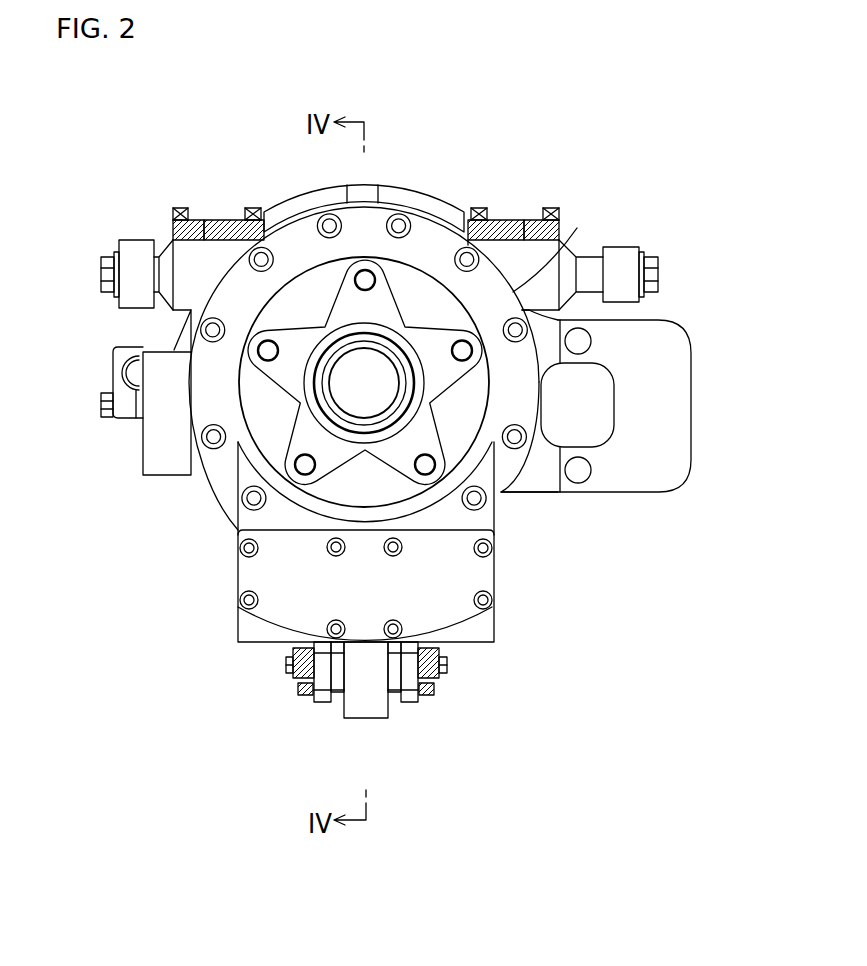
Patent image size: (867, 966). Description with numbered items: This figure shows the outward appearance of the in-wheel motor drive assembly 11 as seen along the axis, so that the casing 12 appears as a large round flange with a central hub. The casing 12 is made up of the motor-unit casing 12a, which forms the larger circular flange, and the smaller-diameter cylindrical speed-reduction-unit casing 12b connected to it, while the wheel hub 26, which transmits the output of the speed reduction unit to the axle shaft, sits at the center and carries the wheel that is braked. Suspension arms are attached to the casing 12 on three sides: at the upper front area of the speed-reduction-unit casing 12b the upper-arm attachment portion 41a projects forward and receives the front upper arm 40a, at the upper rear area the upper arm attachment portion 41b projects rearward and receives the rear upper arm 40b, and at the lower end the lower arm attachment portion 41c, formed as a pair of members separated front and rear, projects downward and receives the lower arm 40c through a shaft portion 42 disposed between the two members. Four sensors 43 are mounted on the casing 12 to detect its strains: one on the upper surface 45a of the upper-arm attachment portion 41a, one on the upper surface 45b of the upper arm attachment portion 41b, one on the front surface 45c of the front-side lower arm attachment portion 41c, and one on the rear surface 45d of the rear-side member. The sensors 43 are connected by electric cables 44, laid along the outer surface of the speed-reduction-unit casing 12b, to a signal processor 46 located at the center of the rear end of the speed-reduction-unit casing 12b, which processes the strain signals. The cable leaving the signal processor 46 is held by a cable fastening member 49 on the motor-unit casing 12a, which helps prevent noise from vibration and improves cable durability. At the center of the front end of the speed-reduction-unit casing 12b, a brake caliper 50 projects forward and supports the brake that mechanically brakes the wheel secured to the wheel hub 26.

The in-wheel motor drive assembly 11 is at (537, 117).
The casing 12 is at (198, 519).
The motor-unit casing 12a is at (432, 199).
The speed-reduction-unit casing 12b is at (587, 226).
The wheel hub 26 is at (457, 413).
The upper arm 40a is at (625, 247).
The upper arm 40b is at (137, 239).
The lower arm 40c is at (368, 719).
The upper-arm attachment portion 41a is at (562, 240).
The upper arm attachment portion 41b is at (168, 228).
The lower arm attachment portion 41c is at (320, 704).
The shaft portion 42 is at (336, 694).
The sensor 43 is at (230, 222).
The electric cable 44 is at (302, 212).
The upper surface 45a is at (528, 222).
The upper surface 45b is at (200, 220).
The front surface 45c is at (440, 686).
The rear surface 45d is at (296, 687).
The signal processor 46 is at (130, 477).
The cable fastening member 49 is at (112, 371).
The brake caliper 50 is at (620, 493).